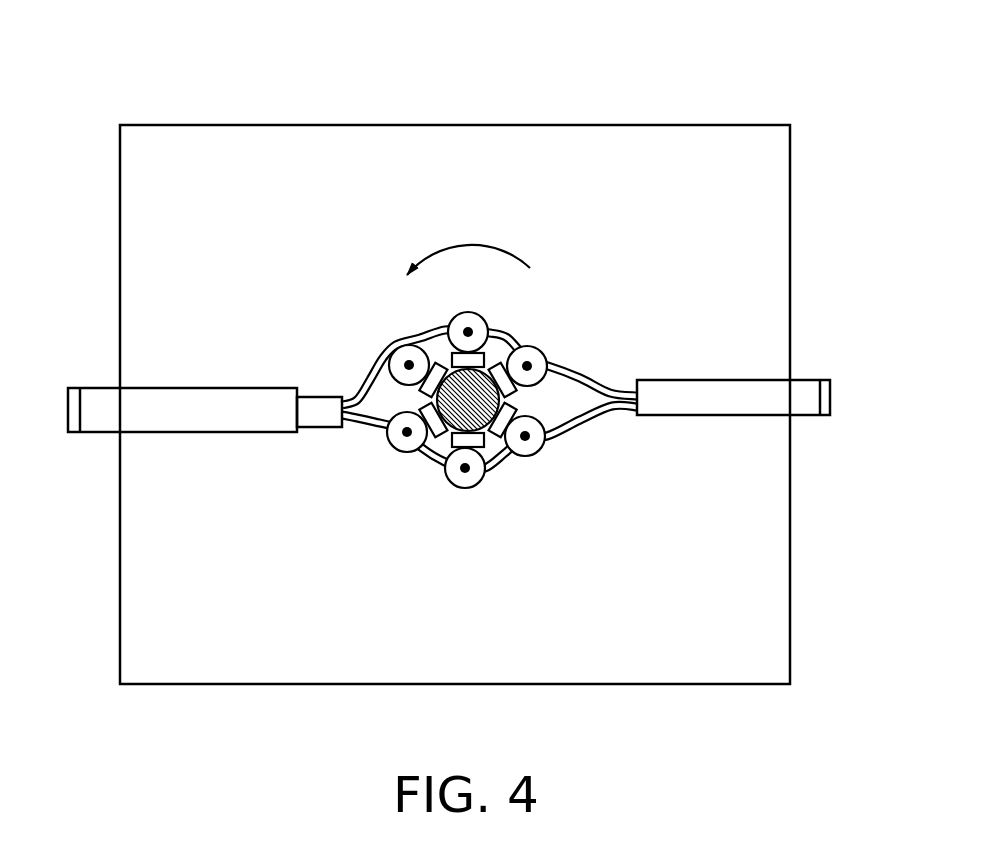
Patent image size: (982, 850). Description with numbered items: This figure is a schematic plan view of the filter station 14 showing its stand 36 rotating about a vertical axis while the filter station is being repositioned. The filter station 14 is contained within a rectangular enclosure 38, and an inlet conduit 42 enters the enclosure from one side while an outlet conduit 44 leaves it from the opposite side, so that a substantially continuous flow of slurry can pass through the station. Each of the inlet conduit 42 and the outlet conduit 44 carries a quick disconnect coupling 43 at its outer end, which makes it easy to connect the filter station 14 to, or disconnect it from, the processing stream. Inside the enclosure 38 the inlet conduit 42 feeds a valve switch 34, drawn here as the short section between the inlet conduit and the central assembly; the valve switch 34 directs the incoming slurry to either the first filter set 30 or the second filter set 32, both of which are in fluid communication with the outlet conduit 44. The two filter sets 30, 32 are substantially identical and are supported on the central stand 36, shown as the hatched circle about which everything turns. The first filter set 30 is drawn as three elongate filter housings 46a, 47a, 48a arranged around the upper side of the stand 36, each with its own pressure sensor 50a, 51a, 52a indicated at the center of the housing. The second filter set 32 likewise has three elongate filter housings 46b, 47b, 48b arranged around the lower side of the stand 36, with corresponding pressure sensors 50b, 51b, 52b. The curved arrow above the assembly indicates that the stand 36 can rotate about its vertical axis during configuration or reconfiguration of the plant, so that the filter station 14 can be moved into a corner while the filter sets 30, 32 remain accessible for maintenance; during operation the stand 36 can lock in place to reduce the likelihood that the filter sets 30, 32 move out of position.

The filter station 14 is at (562, 80).
The enclosure 38 is at (700, 125).
The first filter set 30 is at (270, 281).
The second filter set 32 is at (571, 559).
The inlet conduit 42 is at (107, 388).
The outlet conduit 44 is at (802, 380).
The quick disconnect coupling 43 is at (68, 410).
The valve switch 34 is at (317, 428).
The stand 36 is at (460, 408).
The elongate filter housing 46a is at (395, 346).
The elongate filter housing 46b is at (408, 452).
The pressure sensor 50a is at (409, 365).
The pressure sensor 50b is at (407, 432).
The elongate filter housing 47a is at (483, 314).
The elongate filter housing 47b is at (465, 490).
The pressure sensor 51a is at (468, 332).
The pressure sensor 51b is at (465, 468).
The elongate filter housing 48a is at (536, 349).
The elongate filter housing 48b is at (541, 449).
The pressure sensor 52a is at (527, 366).
The pressure sensor 52b is at (525, 436).